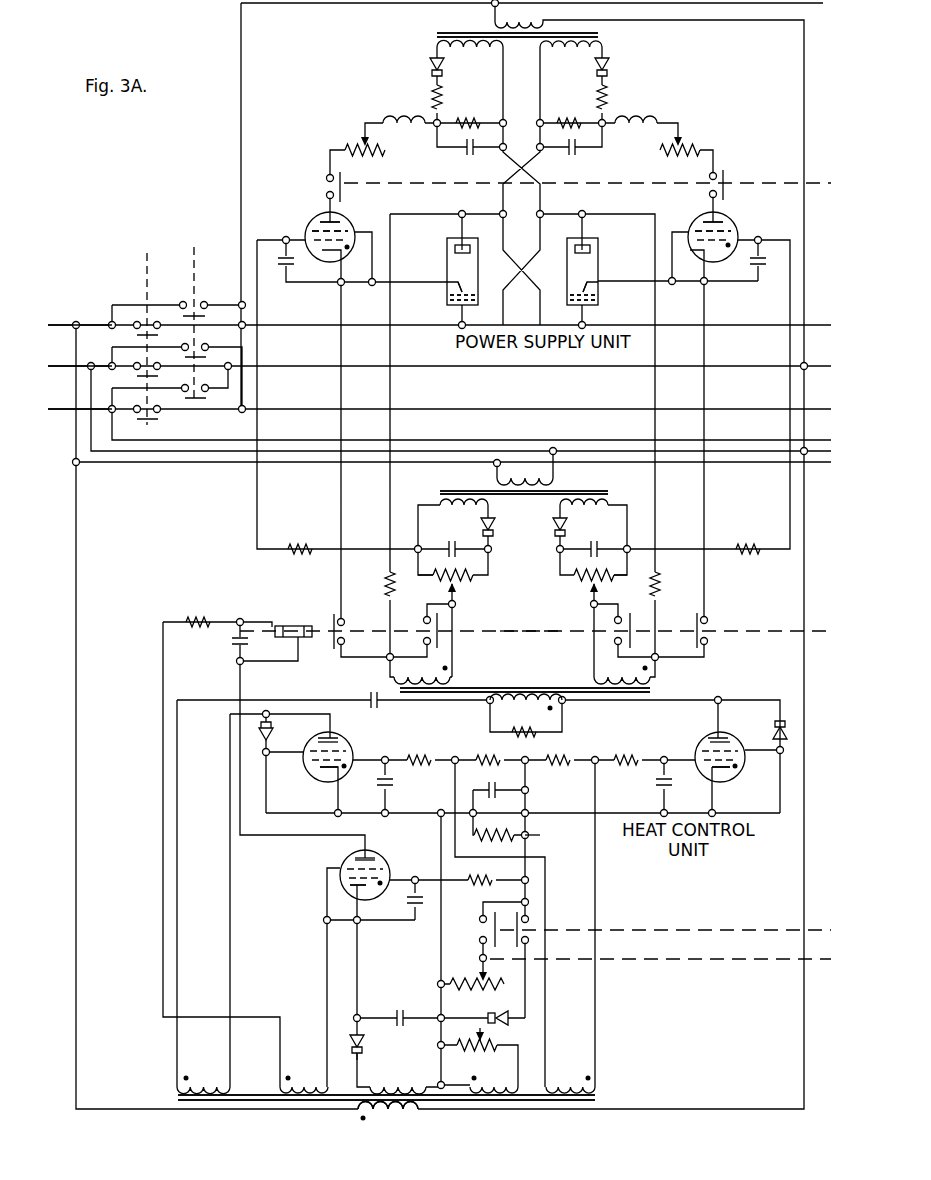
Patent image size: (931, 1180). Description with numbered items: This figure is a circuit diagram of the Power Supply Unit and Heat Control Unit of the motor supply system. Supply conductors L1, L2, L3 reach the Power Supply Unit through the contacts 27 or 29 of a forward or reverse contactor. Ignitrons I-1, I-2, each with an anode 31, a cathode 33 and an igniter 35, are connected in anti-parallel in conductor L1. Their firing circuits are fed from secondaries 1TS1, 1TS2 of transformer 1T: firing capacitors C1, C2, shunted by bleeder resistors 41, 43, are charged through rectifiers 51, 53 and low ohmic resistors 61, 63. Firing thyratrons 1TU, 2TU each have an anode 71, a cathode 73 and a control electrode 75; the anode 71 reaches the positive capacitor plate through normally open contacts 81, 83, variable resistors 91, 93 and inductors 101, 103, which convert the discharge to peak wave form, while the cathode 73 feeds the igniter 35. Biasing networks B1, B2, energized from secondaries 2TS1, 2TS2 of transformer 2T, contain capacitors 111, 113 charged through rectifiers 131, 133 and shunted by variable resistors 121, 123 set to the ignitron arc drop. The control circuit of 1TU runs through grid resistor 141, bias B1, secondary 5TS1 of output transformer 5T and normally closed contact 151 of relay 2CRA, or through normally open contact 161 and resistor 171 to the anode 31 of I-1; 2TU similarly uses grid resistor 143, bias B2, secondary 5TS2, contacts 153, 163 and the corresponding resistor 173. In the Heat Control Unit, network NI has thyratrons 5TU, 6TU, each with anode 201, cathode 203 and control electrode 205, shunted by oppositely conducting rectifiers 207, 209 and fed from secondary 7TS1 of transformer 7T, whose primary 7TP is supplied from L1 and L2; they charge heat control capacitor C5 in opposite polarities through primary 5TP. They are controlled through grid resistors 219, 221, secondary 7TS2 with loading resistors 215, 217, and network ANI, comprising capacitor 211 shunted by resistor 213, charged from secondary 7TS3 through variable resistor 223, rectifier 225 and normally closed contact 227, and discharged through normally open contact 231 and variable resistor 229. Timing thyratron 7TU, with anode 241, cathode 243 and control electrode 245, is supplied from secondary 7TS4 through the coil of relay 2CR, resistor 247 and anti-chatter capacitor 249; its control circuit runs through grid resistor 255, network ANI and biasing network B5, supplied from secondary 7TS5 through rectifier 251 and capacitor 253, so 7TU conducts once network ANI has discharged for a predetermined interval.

The transformer 1T is at (435, 35).
The secondary 1TS1 is at (498, 58).
The secondary 1TS2 is at (594, 58).
The rectifier 51 is at (431, 66).
The rectifier 53 is at (609, 66).
The low ohmic resistor 61 is at (433, 97).
The low ohmic resistor 63 is at (607, 97).
The bleeder resistor 41 is at (482, 118).
The bleeder resistor 43 is at (580, 118).
The inductor 101 is at (390, 128).
The inductor 103 is at (647, 128).
The variable resistor 91 is at (352, 146).
The variable resistor 93 is at (694, 146).
The capacitor C1 is at (470, 157).
The capacitor C2 is at (574, 157).
The normally open contact 81 is at (326, 181).
The normally open contact 83 is at (718, 176).
The thyratron 1TU is at (312, 218).
The thyratron 2TU is at (725, 218).
The anode 71 is at (337, 220).
The control electrode 75 is at (300, 237).
The cathode 73 is at (291, 265).
The anode 31 is at (455, 240).
The ignitron I-1 is at (447, 252).
The ignitron I-2 is at (598, 252).
The igniter 35 is at (450, 287).
The cathode 33 is at (447, 300).
The contacts 27 is at (146, 297).
The contacts 29 is at (195, 297).
The conductor L1 is at (100, 323).
The conductor L2 is at (110, 364).
The conductor L3 is at (106, 416).
The transformer 2T is at (564, 489).
The secondary 2TS1 is at (470, 510).
The secondary 2TS2 is at (569, 510).
The rectifier 131 is at (489, 522).
The rectifier 133 is at (559, 524).
The capacitor 111 is at (450, 546).
The capacitor 113 is at (597, 546).
The variable resistor 121 is at (444, 580).
The variable resistor 123 is at (600, 580).
The biasing network B1 is at (510, 571).
The biasing network B2 is at (557, 571).
The grid resistor 141 is at (292, 548).
The grid resistor 143 is at (762, 548).
The resistor 171 is at (388, 585).
The resistor 173 is at (658, 585).
The relay 2CR is at (310, 620).
The relay 2CRA is at (535, 629).
The normally closed contact 151 is at (334, 638).
The normally open contact 161 is at (426, 641).
The normally open contact 163 is at (613, 640).
The normally closed contact 153 is at (706, 641).
The secondary 5TS1 is at (453, 676).
The secondary 5TS2 is at (593, 678).
The output transformer 5T is at (650, 690).
The primary 5TP is at (540, 708).
The heat control capacitor C5 is at (375, 694).
The resistor 247 is at (200, 617).
The capacitor 249 is at (232, 641).
The rectifier 207 is at (273, 727).
The rectifier 209 is at (775, 722).
The anode 201 is at (331, 743).
The thyratron 5TU is at (346, 749).
The thyratron 6TU is at (717, 740).
The control electrode 205 is at (310, 768).
The cathode 203 is at (330, 782).
The grid resistor 219 is at (410, 757).
The loading resistor 215 is at (500, 756).
The loading resistor 217 is at (546, 756).
The grid resistor 221 is at (634, 756).
The capacitor 211 is at (492, 786).
The resistor 213 is at (490, 840).
The network ANI is at (570, 838).
The network NI is at (668, 894).
The thyratron 7TU is at (350, 852).
The anode 241 is at (373, 857).
The control electrode 245 is at (390, 877).
The cathode 243 is at (363, 899).
The grid resistor 255 is at (485, 889).
The normally open contact 231 is at (478, 930).
The normally closed contact 227 is at (538, 935).
The variable resistor 229 is at (450, 982).
The rectifier 225 is at (489, 1012).
The variable resistor 223 is at (498, 1045).
The capacitor 253 is at (399, 1010).
The rectifier 251 is at (361, 1044).
The biasing network B5 is at (418, 1057).
The secondary 7TS1 is at (170, 1081).
The secondary 7TS4 is at (272, 1081).
The secondary 7TS5 is at (415, 1081).
The secondary 7TS3 is at (493, 1071).
The secondary 7TS2 is at (598, 1088).
The transformer 7T is at (600, 1098).
The primary 7TP is at (376, 1118).